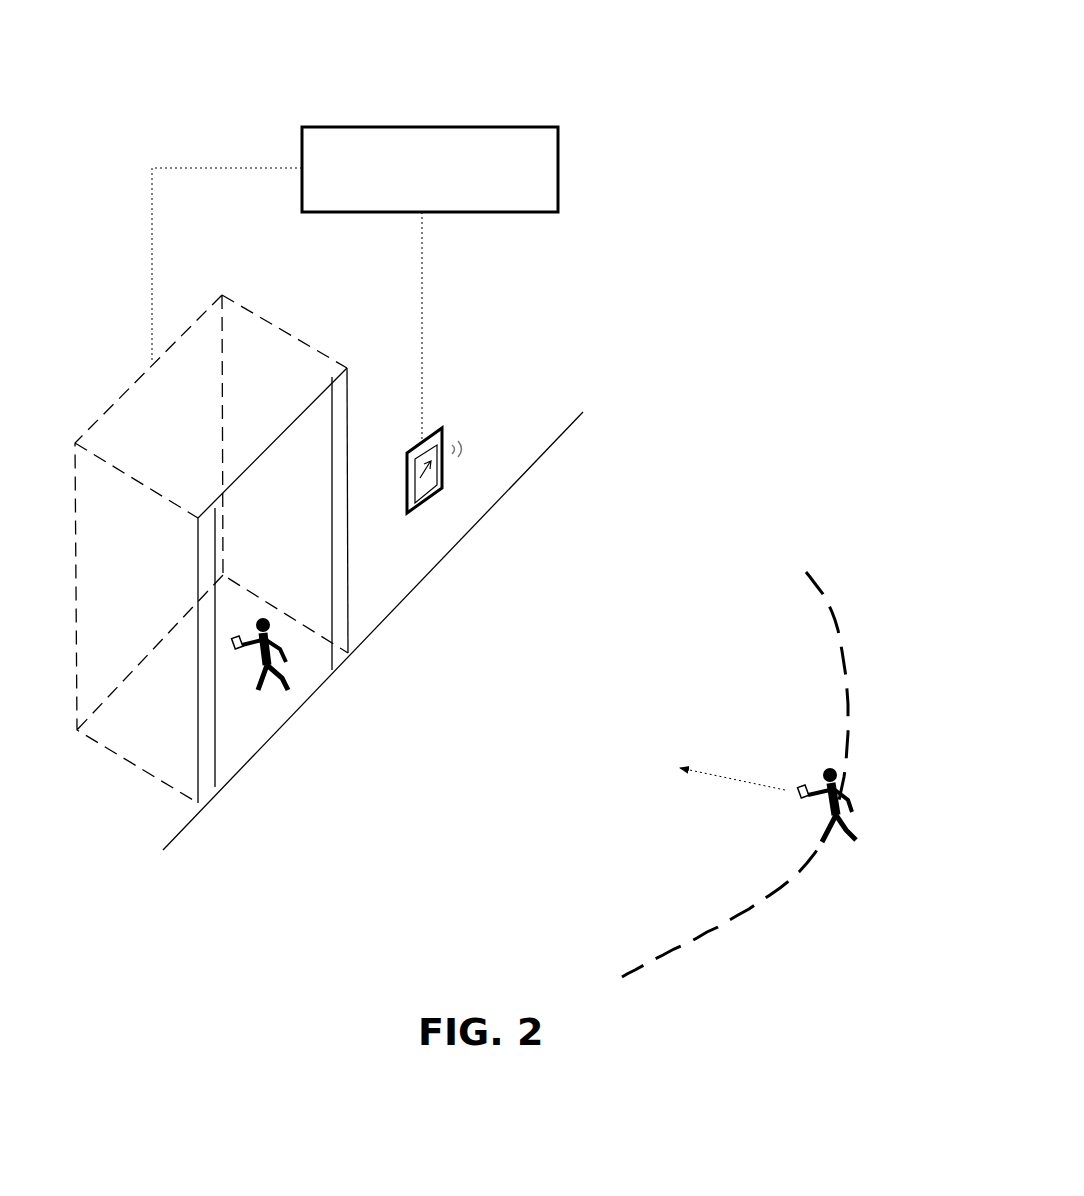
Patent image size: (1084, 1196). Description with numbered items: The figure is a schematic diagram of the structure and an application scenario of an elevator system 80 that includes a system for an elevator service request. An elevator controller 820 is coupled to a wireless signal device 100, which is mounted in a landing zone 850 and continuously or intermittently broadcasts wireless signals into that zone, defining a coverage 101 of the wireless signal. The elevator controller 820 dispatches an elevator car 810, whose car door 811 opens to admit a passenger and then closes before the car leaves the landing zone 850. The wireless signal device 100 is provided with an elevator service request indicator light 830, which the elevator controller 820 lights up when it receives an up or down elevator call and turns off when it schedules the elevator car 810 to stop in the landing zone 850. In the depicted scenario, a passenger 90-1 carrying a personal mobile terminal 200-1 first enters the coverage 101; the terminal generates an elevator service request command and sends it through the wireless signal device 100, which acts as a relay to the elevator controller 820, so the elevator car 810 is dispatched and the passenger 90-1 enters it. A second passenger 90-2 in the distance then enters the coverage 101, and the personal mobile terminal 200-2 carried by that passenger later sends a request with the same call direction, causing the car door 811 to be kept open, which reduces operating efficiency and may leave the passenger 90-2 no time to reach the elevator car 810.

The elevator system 80 is at (329, 68).
The elevator car 810 is at (268, 322).
The car door 811 is at (220, 753).
The elevator controller 820 is at (455, 203).
The elevator service request indicator light 830 is at (428, 430).
The wireless signal device 100 is at (428, 502).
The landing zone 850 is at (657, 413).
The coverage 101 is at (855, 675).
The passenger 90-1 is at (282, 632).
The personal mobile terminal 200-1 is at (235, 637).
The passenger 90-2 is at (850, 780).
The personal mobile terminal 200-2 is at (801, 785).